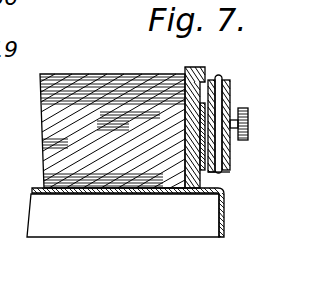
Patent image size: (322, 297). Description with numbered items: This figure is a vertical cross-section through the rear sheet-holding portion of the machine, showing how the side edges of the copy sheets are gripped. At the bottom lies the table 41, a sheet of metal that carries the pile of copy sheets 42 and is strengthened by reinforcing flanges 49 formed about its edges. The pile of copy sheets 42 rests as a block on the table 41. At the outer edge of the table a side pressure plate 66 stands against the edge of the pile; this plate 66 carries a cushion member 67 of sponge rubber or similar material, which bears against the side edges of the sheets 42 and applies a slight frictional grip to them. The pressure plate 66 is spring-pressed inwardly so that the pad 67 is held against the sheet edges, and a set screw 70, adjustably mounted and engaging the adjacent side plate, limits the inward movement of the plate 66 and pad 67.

The copy sheets 42 is at (72, 79).
The cushion member 67 is at (193, 67).
The side pressure plate 66 is at (204, 67).
The set screw 70 is at (248, 112).
The reinforcing flanges 49 is at (213, 222).
The table 41 is at (90, 195).